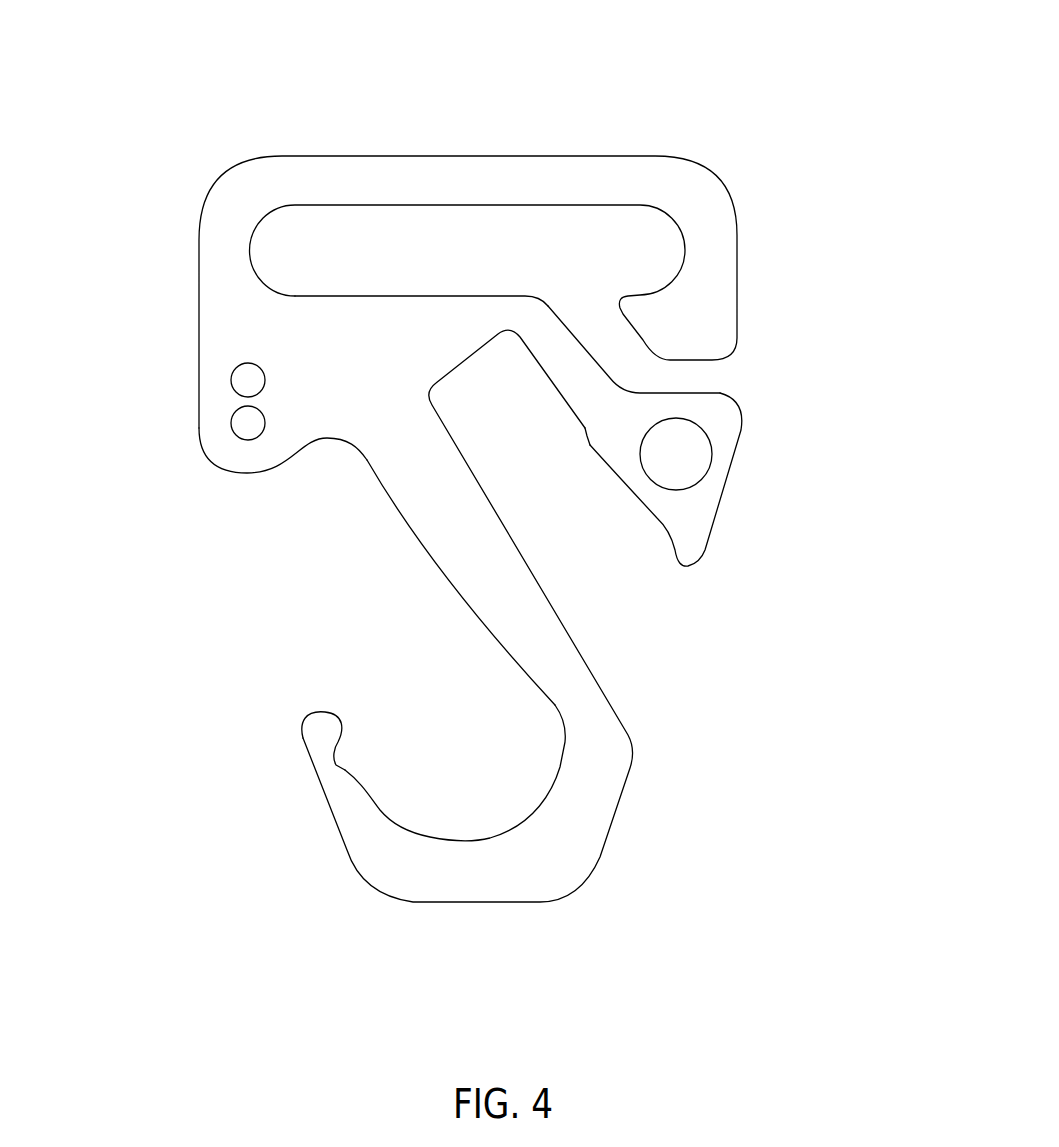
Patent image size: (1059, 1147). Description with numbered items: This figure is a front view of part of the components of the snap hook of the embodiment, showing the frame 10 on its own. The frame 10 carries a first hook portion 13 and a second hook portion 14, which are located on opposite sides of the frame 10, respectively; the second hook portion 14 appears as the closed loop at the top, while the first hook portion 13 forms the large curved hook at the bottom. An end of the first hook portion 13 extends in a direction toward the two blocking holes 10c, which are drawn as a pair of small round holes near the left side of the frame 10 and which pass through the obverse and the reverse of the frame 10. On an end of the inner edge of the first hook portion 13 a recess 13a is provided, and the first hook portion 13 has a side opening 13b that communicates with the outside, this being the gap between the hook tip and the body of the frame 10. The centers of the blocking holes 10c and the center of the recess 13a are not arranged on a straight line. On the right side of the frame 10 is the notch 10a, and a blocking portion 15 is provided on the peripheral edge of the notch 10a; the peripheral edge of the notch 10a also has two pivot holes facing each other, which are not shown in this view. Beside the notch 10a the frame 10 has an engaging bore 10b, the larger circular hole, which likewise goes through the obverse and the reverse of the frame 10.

The frame 10 is at (199, 270).
The notch 10a is at (657, 515).
The engaging bore 10b is at (688, 461).
The blocking holes 10c is at (231, 382).
The first hook portion 13 is at (578, 885).
The recess 13a is at (335, 767).
The side opening 13b is at (258, 592).
The second hook portion 14 is at (720, 193).
The blocking portion 15 is at (588, 445).